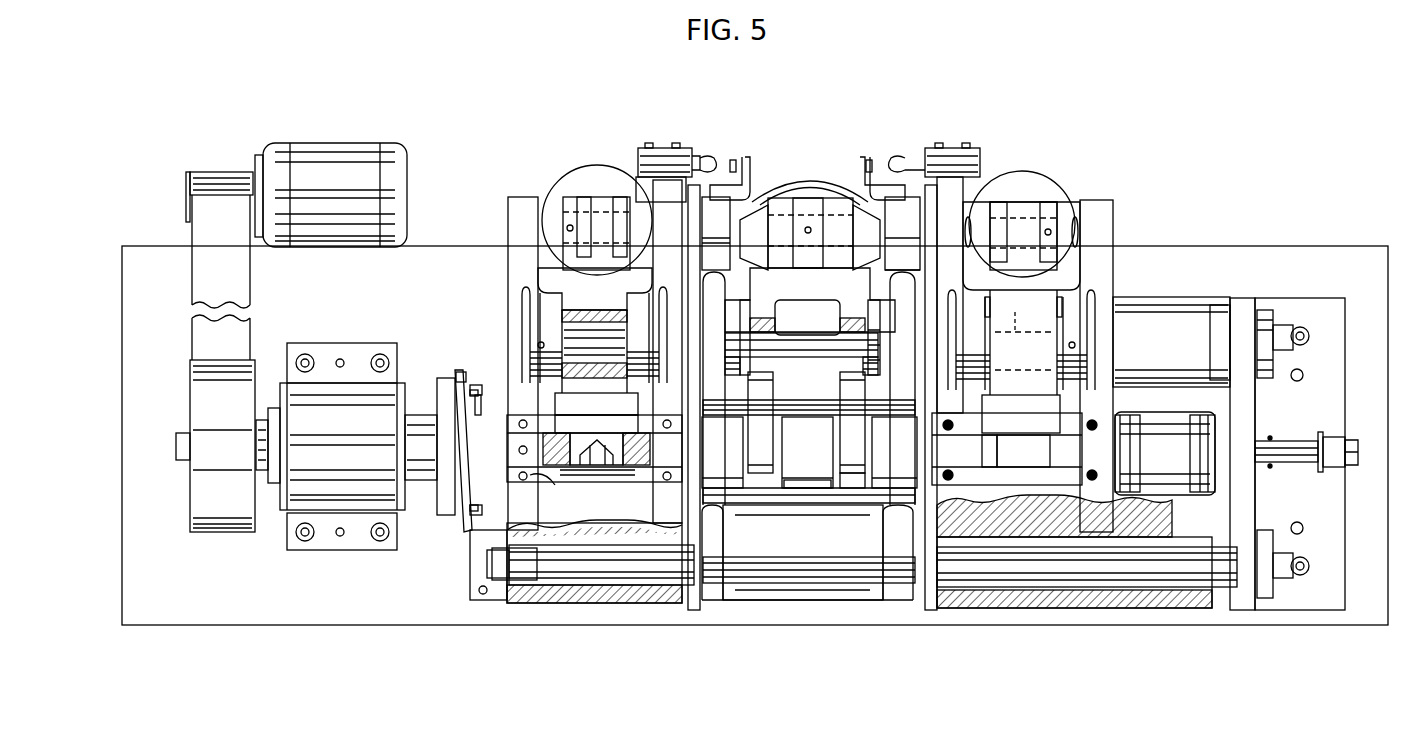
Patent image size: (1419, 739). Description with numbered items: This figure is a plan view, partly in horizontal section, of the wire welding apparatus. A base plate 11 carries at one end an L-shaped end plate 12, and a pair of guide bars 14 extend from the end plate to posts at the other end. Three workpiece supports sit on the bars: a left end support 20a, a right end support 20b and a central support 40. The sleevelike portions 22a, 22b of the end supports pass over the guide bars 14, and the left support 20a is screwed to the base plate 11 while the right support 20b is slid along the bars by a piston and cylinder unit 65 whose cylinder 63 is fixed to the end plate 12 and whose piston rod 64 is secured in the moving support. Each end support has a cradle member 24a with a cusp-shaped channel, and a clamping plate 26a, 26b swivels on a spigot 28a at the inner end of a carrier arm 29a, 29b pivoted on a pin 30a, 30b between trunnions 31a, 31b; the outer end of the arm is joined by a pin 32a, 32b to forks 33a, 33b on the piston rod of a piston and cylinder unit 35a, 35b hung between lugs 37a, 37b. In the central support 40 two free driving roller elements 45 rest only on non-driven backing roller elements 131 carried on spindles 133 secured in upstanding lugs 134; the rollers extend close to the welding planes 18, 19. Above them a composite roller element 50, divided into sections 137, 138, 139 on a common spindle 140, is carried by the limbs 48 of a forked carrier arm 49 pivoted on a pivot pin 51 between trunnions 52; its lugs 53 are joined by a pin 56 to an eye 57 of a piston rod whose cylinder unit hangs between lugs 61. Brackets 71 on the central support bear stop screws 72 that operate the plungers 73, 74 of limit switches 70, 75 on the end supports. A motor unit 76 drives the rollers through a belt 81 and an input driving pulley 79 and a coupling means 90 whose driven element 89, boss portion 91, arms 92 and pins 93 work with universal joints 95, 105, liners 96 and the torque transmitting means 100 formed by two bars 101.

The base plate 11 is at (352, 625).
The end plate 12 is at (1238, 413).
The guide bars 14 is at (1228, 302).
The welding plane 18 is at (690, 623).
The welding plane 19 is at (935, 623).
The end support 20a is at (525, 606).
The end support 20b is at (1010, 606).
The sleevelike portions 22a is at (608, 608).
The sleevelike portions 22b is at (1120, 300).
The cradle member 24a is at (660, 473).
The clamping plate 26a is at (570, 457).
The clamping plate 26b is at (973, 447).
The spigot 28a is at (817, 441).
The carrier arm 29a is at (596, 404).
The carrier arm 29b is at (1021, 414).
The pin 30a is at (594, 344).
The pin 30b is at (1021, 298).
The trunnions 31a is at (560, 330).
The trunnions 31b is at (1045, 350).
The pin 32a is at (585, 188).
The pin 32b is at (1042, 203).
The forks 33a is at (560, 236).
The forks 33b is at (1040, 230).
The piston and cylinder unit 35a is at (560, 180).
The piston and cylinder unit 35b is at (1060, 195).
The lugs 37a is at (510, 195).
The lugs 37b is at (1000, 158).
The central support 40 is at (802, 603).
The driving roller elements 45 is at (822, 360).
The limbs 48 is at (806, 422).
The forked carrier arm 49 is at (902, 259).
The composite roller element 50 is at (790, 493).
The pivot pin 51 is at (825, 345).
The trunnions 52 is at (708, 288).
The lugs 53 is at (767, 209).
The pin 56 is at (833, 185).
The eye 57 is at (808, 180).
The lugs 61 is at (811, 227).
The cylinder 63 is at (1165, 453).
The piston rod 64 is at (1120, 433).
The piston and cylinder unit 65 is at (1200, 438).
The limit switch 70 is at (960, 158).
The brackets 71 is at (755, 158).
The stop screw 72 is at (734, 160).
The plunger 73 is at (918, 158).
The plunger 74 is at (705, 155).
The limit switch 75 is at (655, 155).
The motor unit 76 is at (347, 150).
The input driving pulley 79 is at (253, 526).
The belt 81 is at (240, 278).
The driven element 89 is at (526, 444).
The coupling means 90 is at (455, 515).
The boss portion 91 is at (436, 375).
The arms 92 is at (452, 375).
The pins 93 is at (480, 402).
The universal joint 95 is at (478, 390).
The liners 96 is at (460, 375).
The torque transmitting means 100 is at (444, 451).
The bars 101 is at (445, 375).
The universal joint 105 is at (540, 477).
The backing roller elements 131 is at (885, 395).
The spindles 133 is at (840, 490).
The lugs 134 is at (740, 613).
The roller section 137 is at (725, 473).
The roller section 138 is at (820, 468).
The roller section 139 is at (894, 452).
The spindle 140 is at (807, 452).